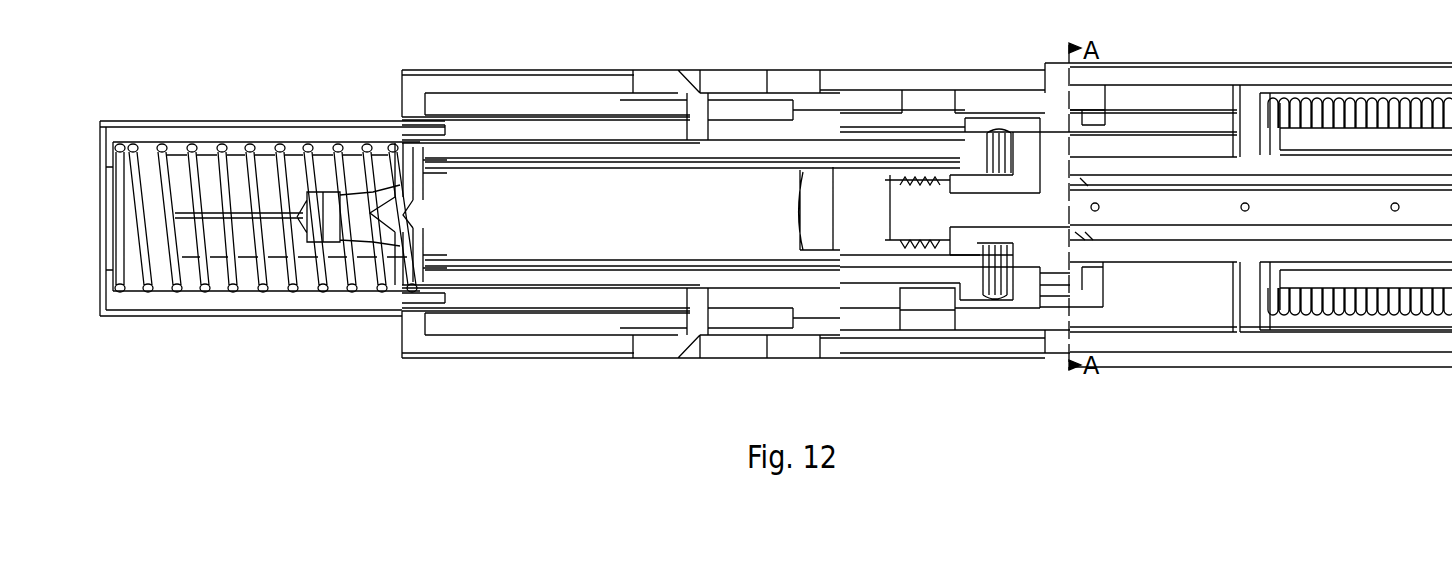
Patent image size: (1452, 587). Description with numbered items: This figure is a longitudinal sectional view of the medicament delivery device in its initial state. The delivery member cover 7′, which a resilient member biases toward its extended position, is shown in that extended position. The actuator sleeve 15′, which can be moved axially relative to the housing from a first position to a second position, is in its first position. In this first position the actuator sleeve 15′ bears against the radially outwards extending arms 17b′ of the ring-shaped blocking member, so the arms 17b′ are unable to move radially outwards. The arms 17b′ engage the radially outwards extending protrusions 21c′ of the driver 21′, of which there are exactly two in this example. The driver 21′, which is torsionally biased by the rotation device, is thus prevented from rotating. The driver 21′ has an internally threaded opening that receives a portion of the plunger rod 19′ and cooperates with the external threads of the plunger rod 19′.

The delivery member cover 7′ is at (270, 124).
The actuator sleeve 15′ is at (988, 105).
The arms 17b′ is at (1080, 128).
The plunger rod 19′ is at (1175, 210).
The driver 21′ is at (1188, 165).
The protrusions 21c′ is at (1146, 150).